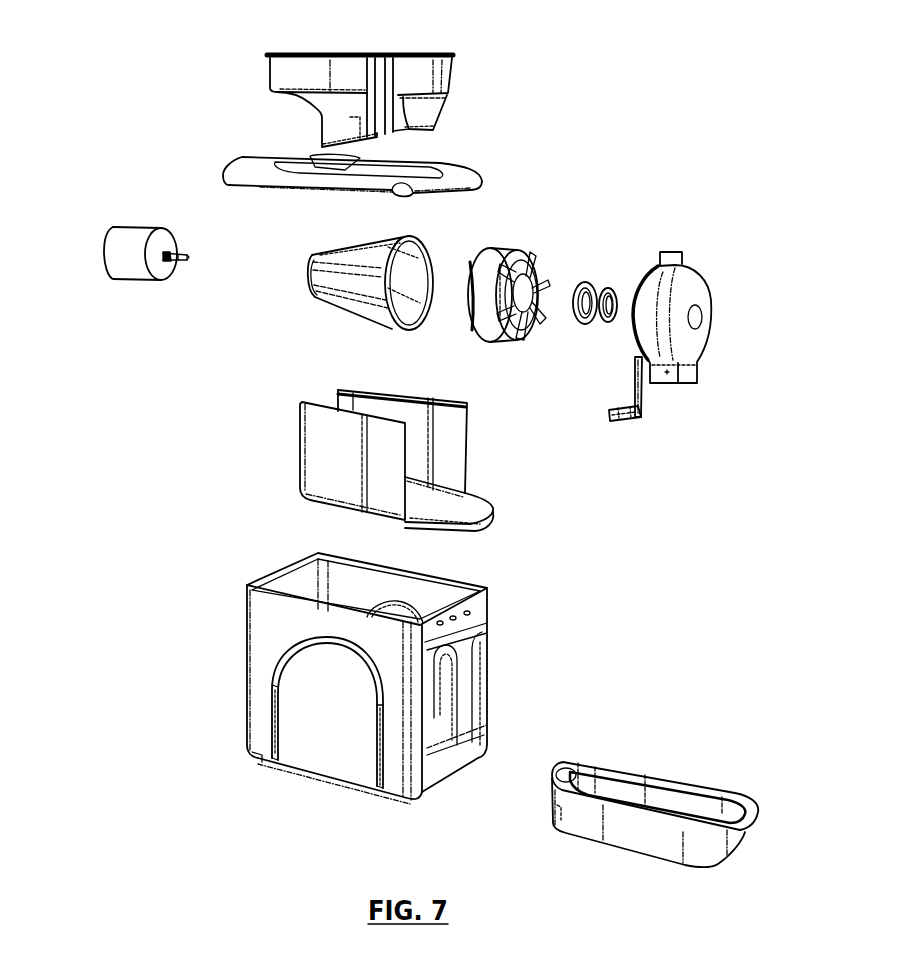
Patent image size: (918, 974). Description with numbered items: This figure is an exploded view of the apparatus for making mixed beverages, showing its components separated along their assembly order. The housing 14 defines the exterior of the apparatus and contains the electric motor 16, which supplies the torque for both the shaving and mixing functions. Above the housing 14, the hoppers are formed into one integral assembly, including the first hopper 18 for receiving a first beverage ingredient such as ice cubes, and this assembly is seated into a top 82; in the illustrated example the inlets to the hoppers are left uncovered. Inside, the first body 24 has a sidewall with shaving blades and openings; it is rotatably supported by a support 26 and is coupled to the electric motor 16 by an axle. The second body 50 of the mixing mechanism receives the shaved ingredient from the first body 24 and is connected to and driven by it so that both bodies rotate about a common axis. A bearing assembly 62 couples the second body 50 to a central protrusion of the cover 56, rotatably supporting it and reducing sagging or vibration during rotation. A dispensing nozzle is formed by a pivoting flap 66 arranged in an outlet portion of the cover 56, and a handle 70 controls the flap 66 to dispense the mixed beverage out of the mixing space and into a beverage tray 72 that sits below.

The first hopper 18 is at (430, 54).
The top 82 is at (460, 167).
The electric motor 16 is at (120, 238).
The first body 24 is at (316, 251).
The second body 50 is at (508, 246).
The bearing assembly 62 is at (623, 283).
The cover 56 is at (704, 291).
The handle 70 is at (645, 400).
The pivoting flap 66 is at (613, 413).
The support 26 is at (313, 452).
The housing 14 is at (267, 638).
The beverage tray 72 is at (688, 797).